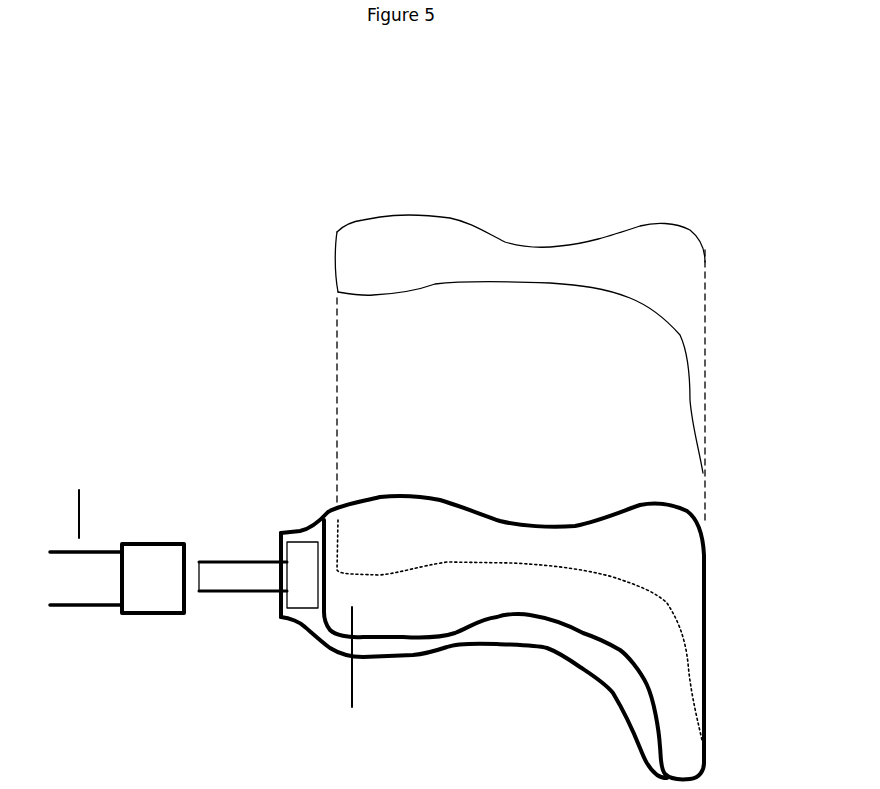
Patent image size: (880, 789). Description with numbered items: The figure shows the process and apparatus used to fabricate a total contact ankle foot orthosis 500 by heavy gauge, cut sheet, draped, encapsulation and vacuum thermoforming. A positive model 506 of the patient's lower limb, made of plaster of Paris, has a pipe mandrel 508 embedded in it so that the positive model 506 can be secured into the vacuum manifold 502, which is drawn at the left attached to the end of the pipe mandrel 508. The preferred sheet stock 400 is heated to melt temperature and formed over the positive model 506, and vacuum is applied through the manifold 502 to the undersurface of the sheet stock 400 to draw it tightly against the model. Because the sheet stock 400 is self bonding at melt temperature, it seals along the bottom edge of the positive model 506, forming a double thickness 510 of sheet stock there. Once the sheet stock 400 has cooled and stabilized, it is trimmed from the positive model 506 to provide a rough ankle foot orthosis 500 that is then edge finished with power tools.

The ankle foot orthosis 500 is at (504, 251).
The vacuum manifold 502 is at (147, 538).
The pipe mandrel 508 is at (232, 557).
The positive model 506 is at (660, 555).
The preferred sheet stock 400 is at (642, 622).
The double thickness 510 is at (557, 640).